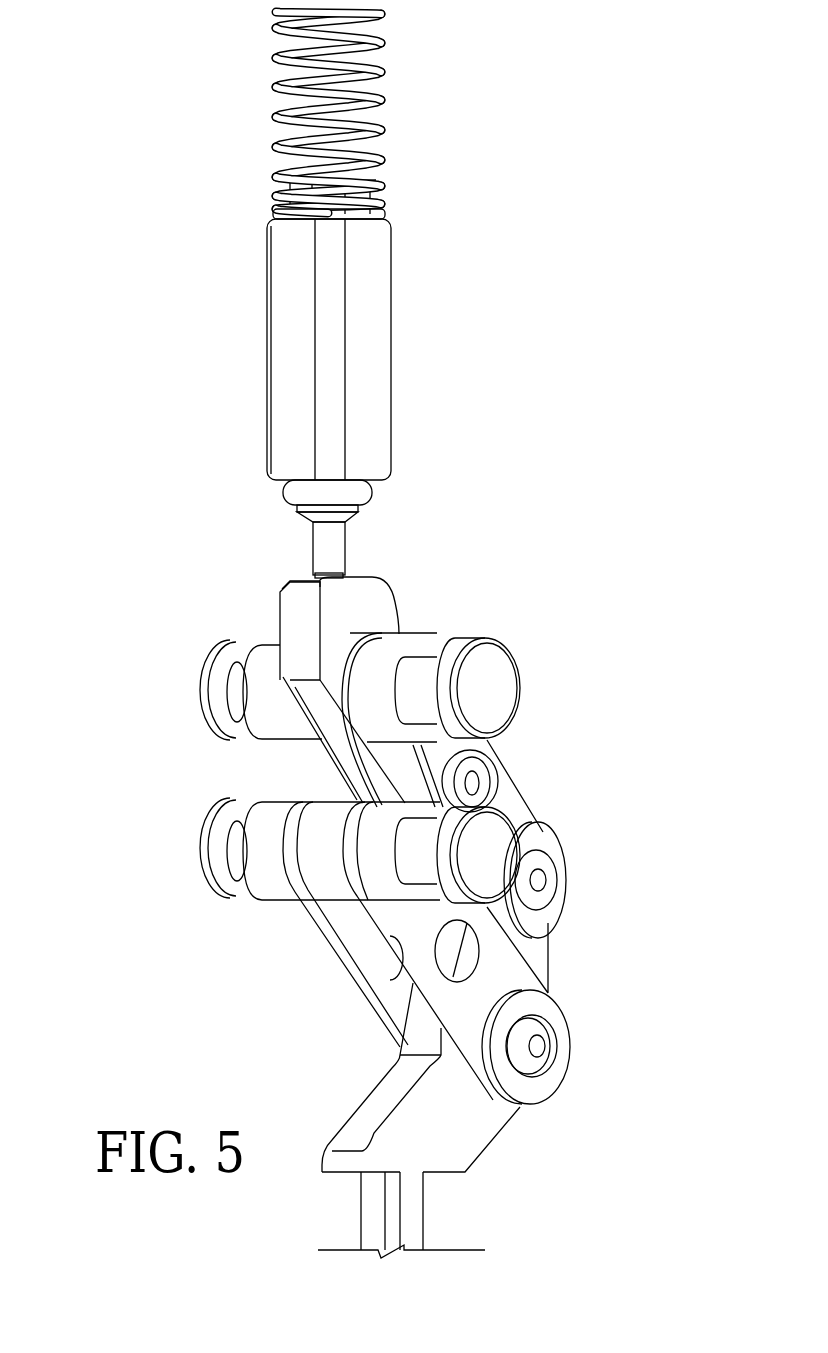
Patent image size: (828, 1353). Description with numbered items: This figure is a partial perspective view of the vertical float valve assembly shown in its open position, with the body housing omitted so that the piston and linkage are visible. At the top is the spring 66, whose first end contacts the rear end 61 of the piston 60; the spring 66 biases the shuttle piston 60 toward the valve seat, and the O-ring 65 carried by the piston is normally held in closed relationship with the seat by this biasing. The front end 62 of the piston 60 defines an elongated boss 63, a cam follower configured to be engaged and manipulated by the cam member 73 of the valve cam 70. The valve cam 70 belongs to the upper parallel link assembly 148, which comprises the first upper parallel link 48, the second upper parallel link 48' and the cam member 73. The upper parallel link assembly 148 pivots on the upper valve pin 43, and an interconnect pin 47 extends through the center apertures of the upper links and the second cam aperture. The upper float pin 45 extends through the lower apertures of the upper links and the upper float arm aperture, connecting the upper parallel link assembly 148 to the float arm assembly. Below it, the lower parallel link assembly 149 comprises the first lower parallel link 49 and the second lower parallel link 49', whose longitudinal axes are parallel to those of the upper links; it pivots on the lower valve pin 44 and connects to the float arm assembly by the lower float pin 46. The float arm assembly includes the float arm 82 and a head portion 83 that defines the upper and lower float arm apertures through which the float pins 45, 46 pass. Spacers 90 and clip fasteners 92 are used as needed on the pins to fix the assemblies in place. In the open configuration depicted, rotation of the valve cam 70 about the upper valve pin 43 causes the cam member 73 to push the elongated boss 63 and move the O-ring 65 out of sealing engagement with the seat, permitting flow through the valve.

The upper valve pin 43 is at (497, 692).
The lower valve pin 44 is at (500, 843).
The upper float pin 45 is at (548, 880).
The lower float pin 46 is at (543, 1033).
The interconnect pin 47 is at (477, 770).
The first upper parallel link 48 is at (476, 732).
The second upper parallel link 48' is at (298, 740).
The first lower parallel link 49 is at (485, 951).
The second lower parallel link 49' is at (335, 924).
The piston 60 is at (280, 259).
The rear end 61 is at (285, 196).
The front end 62 is at (340, 538).
The elongated boss 63 is at (310, 572).
The O-ring 65 is at (295, 493).
The spring 66 is at (270, 90).
The valve cam 70 is at (296, 613).
The cam member 73 is at (292, 585).
The float arm 82 is at (412, 1211).
The head portion 83 is at (480, 1128).
The spacer 90 is at (410, 645).
The clip fastener 92 is at (203, 697).
The upper parallel link assembly 148 is at (556, 672).
The lower parallel link assembly 149 is at (212, 972).